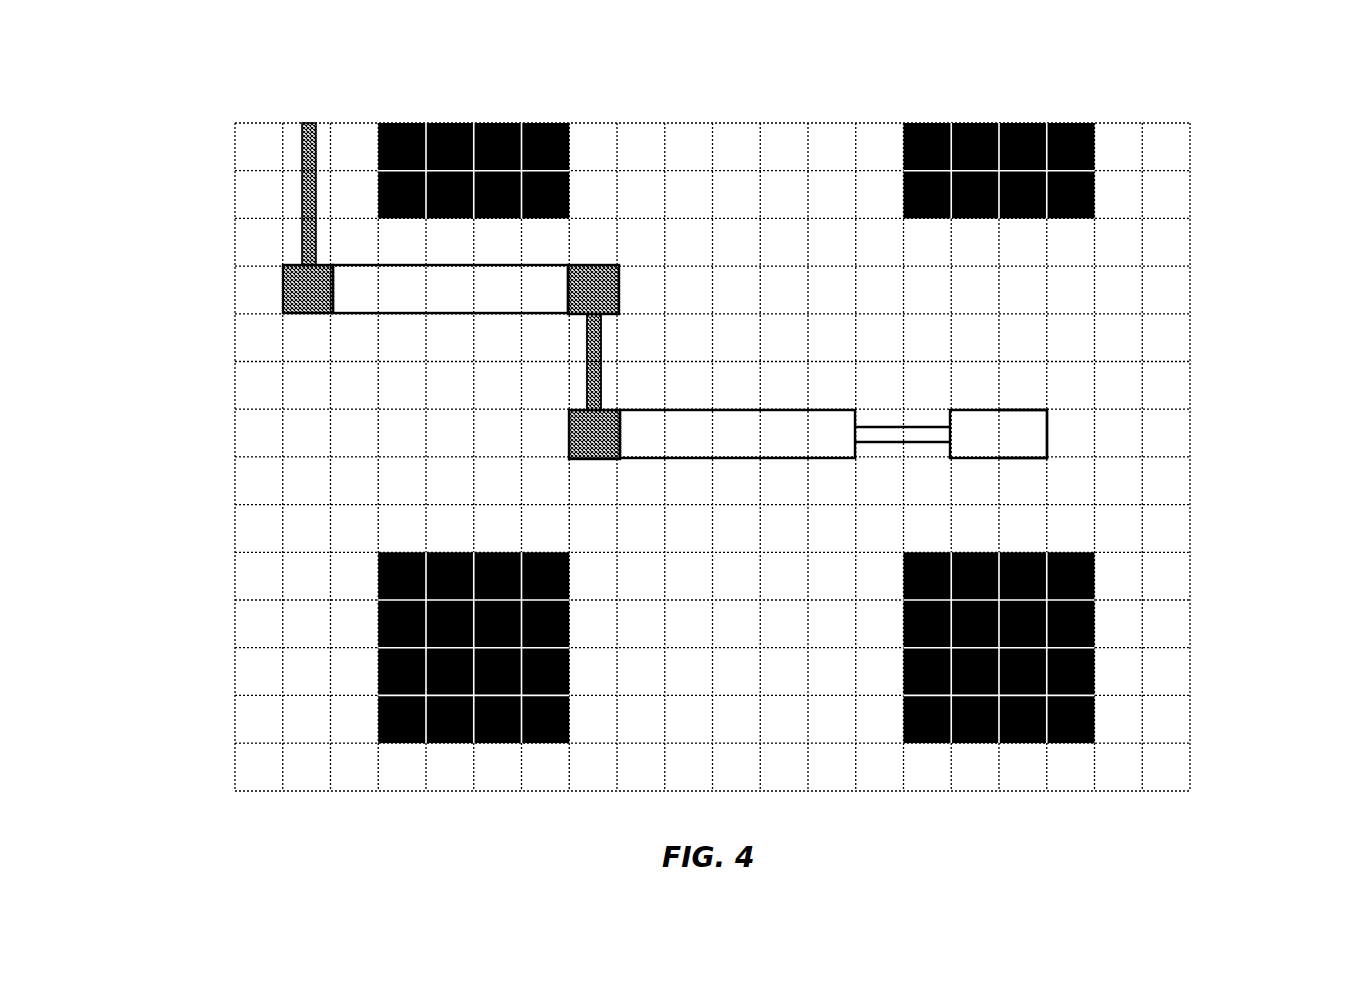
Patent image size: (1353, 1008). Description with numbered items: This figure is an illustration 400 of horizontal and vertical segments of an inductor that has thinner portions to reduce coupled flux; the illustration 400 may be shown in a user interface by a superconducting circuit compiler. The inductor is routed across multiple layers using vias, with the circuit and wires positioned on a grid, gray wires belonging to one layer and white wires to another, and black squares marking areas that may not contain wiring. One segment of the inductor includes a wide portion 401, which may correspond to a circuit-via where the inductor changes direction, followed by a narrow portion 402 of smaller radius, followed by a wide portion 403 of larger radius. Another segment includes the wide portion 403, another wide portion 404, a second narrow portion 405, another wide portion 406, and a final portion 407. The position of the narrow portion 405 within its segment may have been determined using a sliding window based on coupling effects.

The illustration 400 is at (204, 87).
The wide portion 401 is at (602, 258).
The narrow portion 402 is at (585, 373).
The wide portion 403 is at (565, 437).
The wide portion 404 is at (703, 407).
The second narrow portion 405 is at (878, 418).
The wide portion 406 is at (978, 425).
The final portion 407 is at (1027, 437).